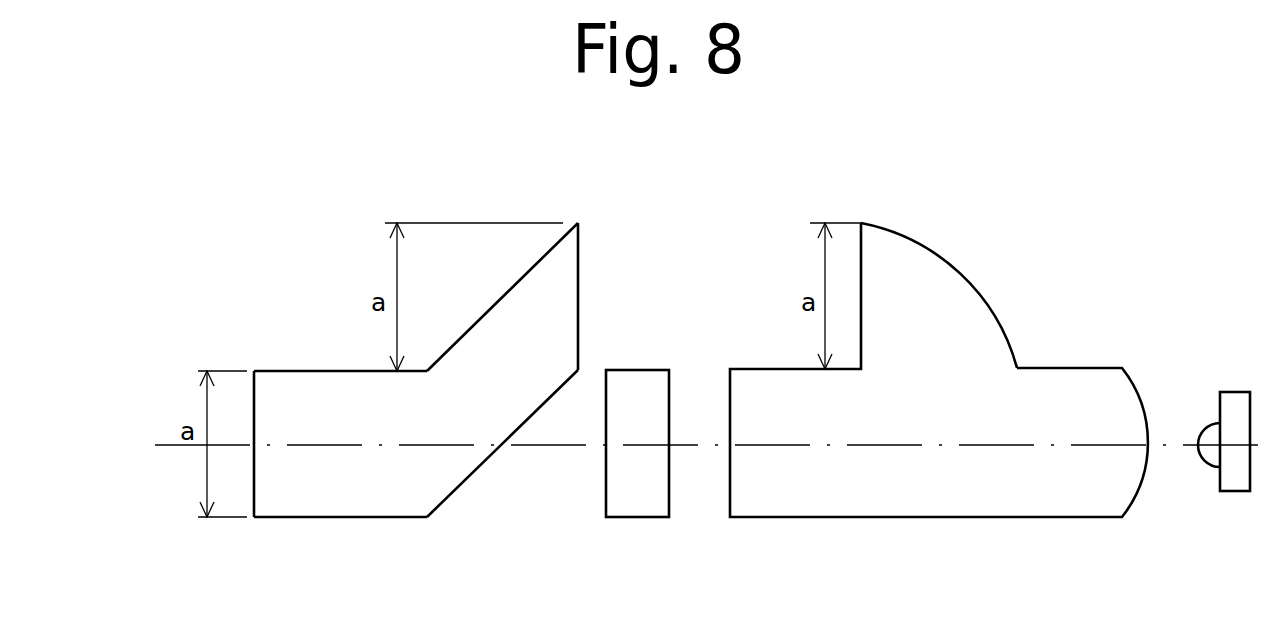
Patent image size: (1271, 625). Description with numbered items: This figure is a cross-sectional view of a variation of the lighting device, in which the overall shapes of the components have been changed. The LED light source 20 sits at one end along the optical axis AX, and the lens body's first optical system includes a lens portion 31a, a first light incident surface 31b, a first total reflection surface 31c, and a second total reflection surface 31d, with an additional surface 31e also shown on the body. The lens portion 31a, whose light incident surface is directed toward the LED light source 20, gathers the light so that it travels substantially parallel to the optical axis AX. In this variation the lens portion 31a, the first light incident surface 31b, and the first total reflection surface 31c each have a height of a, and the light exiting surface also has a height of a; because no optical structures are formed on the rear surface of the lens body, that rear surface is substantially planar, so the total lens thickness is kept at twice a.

The LED light source 20 is at (1233, 392).
The lens portion 31a is at (892, 228).
The first light incident surface 31b is at (578, 272).
The first total reflection surface 31c is at (533, 267).
The second total reflection surface 31d is at (461, 489).
The light incident end face 31e is at (254, 395).
The optical axis AX is at (690, 447).